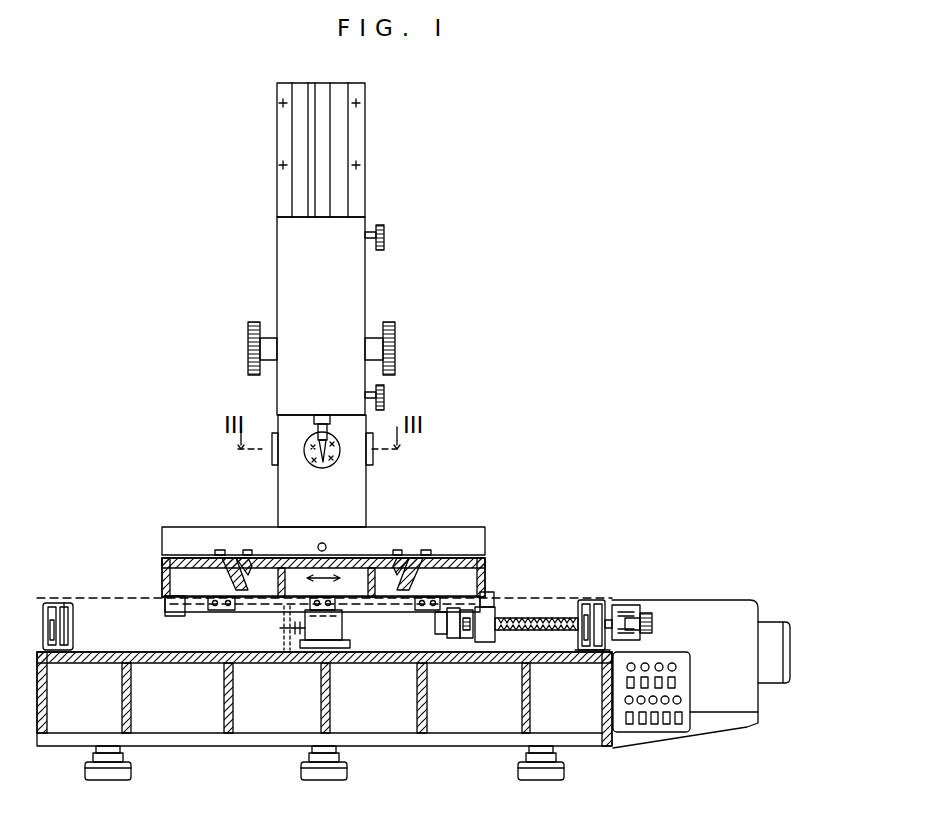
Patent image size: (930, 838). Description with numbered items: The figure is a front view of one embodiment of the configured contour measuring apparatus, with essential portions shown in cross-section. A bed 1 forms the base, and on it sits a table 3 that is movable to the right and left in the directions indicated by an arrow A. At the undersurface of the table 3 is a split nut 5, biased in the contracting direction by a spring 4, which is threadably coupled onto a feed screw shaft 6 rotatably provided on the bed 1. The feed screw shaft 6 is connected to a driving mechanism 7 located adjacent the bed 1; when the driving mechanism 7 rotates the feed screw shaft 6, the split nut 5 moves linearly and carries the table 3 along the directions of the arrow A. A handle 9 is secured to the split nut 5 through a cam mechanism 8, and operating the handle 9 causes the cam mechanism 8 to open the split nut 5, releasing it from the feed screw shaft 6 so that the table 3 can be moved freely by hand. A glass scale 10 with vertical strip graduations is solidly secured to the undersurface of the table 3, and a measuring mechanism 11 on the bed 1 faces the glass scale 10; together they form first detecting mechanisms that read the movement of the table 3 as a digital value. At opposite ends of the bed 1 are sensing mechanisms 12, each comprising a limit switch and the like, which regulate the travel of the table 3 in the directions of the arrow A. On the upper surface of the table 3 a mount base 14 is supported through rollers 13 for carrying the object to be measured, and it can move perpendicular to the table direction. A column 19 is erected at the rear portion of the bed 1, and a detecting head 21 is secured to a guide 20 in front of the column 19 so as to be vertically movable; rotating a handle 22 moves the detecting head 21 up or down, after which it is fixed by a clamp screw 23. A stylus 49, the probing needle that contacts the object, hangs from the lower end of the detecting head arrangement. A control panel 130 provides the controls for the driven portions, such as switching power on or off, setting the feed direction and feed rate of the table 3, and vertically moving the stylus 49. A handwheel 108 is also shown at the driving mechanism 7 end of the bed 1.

The bed 1 is at (41, 686).
The table 3 is at (486, 586).
The spring 4 is at (444, 640).
The split nut 5 is at (458, 640).
The feed screw shaft 6 is at (536, 617).
The driving mechanism 7 is at (704, 600).
The cam mechanism 8 is at (472, 640).
The handle 9 is at (497, 607).
The glass scale 10 is at (196, 618).
The measuring mechanism 11 is at (352, 624).
The sensing mechanism 12 is at (66, 602).
The rollers 13 is at (235, 553).
The mount base 14 is at (397, 528).
The column 19 is at (367, 488).
The guide 20 is at (311, 128).
The detecting head 21 is at (367, 283).
The handle 22 is at (397, 343).
The clamp screw 23 is at (386, 237).
The stylus 49 is at (319, 463).
The handwheel 108 is at (648, 612).
The control panel 130 is at (683, 692).
The arrow A is at (326, 578).